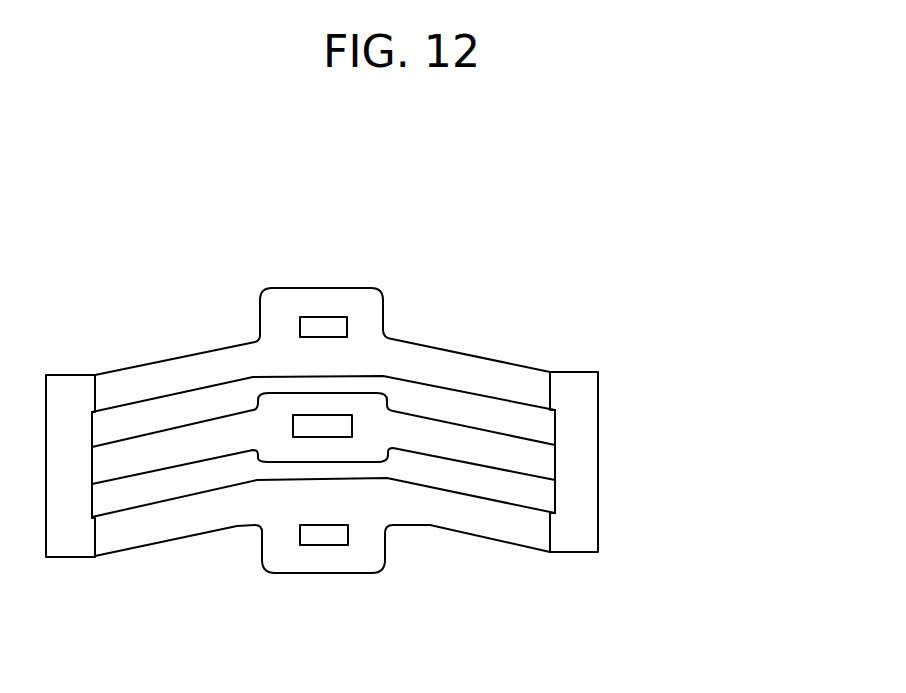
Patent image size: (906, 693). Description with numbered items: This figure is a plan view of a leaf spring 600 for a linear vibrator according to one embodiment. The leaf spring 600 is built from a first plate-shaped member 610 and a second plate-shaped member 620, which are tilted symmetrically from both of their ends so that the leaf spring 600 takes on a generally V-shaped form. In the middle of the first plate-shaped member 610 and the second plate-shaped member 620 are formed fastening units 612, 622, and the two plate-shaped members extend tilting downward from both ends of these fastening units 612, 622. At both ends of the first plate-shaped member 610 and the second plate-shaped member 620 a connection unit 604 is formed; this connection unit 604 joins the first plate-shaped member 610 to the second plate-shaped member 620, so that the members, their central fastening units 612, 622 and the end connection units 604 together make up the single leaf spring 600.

The leaf spring 600 is at (610, 233).
The connection unit 604 is at (583, 463).
The first plate-shaped member 610 is at (512, 465).
The fastening unit 612 is at (292, 403).
The second plate-shaped member 620 is at (472, 380).
The fastening unit 622 is at (317, 298).